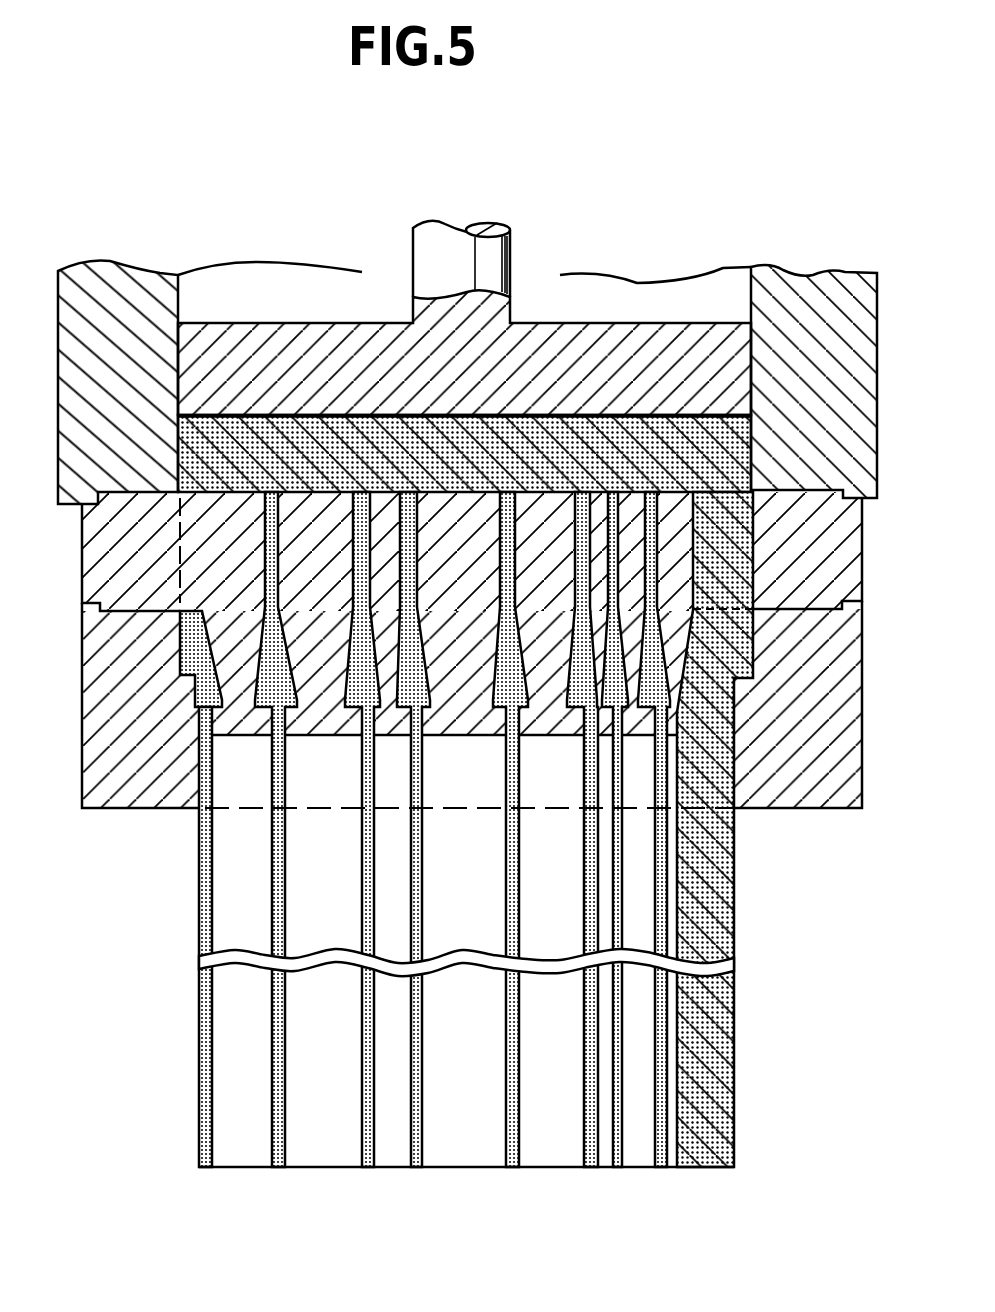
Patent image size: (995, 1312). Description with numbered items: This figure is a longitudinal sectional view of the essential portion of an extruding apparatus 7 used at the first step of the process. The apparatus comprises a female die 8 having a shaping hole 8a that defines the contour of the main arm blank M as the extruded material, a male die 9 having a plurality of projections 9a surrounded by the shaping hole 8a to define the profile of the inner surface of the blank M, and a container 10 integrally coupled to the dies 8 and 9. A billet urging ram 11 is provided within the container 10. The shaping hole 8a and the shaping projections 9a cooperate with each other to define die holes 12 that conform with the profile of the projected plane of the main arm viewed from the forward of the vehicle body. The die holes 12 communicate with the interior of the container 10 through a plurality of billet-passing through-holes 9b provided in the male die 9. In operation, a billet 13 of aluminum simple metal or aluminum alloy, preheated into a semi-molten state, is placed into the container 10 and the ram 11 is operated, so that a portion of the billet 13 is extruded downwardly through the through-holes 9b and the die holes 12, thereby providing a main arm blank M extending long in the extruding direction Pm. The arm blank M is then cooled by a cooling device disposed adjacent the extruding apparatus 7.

The extruding apparatus 7 is at (776, 903).
The female die 8 is at (806, 716).
The shaping hole 8a is at (199, 742).
The male die 9 is at (809, 568).
The projections 9a is at (460, 727).
The billet-passing through-holes 9b is at (352, 530).
The container 10 is at (818, 414).
The billet urging ram 11 is at (496, 391).
The die holes 12 is at (196, 706).
The billet 13 is at (583, 445).
The main arm blank M is at (740, 1065).
The extruding direction Pm is at (465, 198).